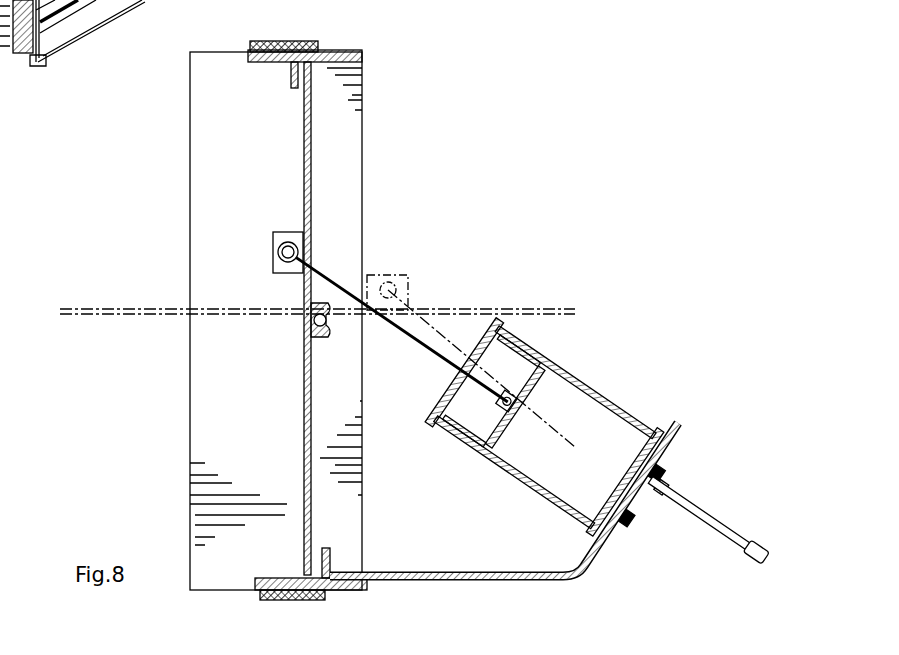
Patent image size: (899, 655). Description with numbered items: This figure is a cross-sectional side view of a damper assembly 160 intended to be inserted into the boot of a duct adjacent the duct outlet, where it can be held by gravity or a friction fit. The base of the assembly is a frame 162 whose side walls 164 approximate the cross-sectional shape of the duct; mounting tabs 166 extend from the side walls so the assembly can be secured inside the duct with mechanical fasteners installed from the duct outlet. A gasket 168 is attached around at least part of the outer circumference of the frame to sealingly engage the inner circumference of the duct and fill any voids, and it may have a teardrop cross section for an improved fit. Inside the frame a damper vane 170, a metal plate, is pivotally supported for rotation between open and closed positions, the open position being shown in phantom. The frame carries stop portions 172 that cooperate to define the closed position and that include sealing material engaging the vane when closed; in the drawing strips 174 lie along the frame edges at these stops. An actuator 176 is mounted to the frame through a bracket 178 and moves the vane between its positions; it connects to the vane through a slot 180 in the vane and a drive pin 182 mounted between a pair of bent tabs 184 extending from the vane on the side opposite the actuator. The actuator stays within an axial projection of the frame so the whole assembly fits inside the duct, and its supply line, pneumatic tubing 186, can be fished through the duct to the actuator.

The damper assembly 160 is at (112, 150).
The frame 162 is at (338, 102).
The side walls 164 is at (345, 52).
The mounting tabs 166 is at (215, 178).
The gasket 168 is at (300, 46).
The damper vane 170 is at (310, 176).
The stop portions 172 is at (93, 10).
The seal strip 174 is at (320, 50).
The actuator 176 is at (640, 345).
The bracket 178 is at (462, 573).
The slot 180 is at (312, 220).
The drive pin 182 is at (273, 250).
The bent tabs 184 is at (275, 268).
The pneumatic tubing 186 is at (700, 535).